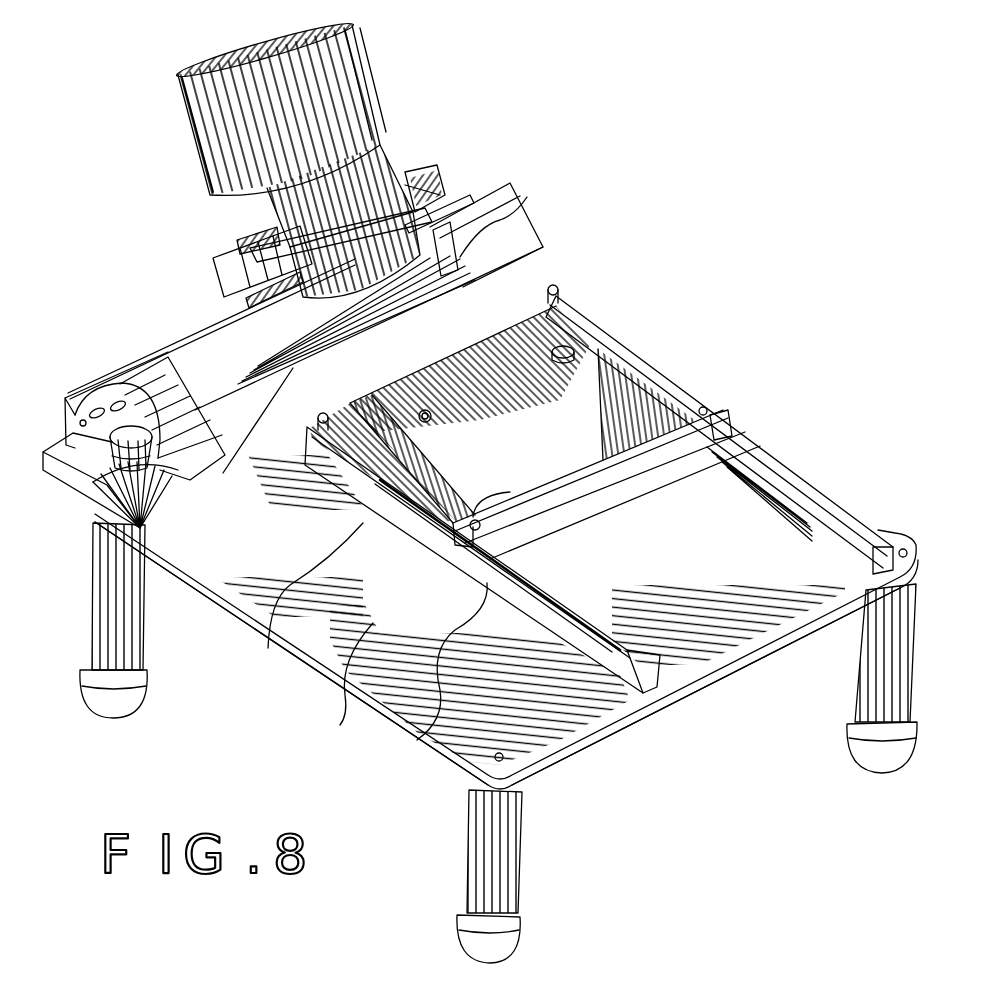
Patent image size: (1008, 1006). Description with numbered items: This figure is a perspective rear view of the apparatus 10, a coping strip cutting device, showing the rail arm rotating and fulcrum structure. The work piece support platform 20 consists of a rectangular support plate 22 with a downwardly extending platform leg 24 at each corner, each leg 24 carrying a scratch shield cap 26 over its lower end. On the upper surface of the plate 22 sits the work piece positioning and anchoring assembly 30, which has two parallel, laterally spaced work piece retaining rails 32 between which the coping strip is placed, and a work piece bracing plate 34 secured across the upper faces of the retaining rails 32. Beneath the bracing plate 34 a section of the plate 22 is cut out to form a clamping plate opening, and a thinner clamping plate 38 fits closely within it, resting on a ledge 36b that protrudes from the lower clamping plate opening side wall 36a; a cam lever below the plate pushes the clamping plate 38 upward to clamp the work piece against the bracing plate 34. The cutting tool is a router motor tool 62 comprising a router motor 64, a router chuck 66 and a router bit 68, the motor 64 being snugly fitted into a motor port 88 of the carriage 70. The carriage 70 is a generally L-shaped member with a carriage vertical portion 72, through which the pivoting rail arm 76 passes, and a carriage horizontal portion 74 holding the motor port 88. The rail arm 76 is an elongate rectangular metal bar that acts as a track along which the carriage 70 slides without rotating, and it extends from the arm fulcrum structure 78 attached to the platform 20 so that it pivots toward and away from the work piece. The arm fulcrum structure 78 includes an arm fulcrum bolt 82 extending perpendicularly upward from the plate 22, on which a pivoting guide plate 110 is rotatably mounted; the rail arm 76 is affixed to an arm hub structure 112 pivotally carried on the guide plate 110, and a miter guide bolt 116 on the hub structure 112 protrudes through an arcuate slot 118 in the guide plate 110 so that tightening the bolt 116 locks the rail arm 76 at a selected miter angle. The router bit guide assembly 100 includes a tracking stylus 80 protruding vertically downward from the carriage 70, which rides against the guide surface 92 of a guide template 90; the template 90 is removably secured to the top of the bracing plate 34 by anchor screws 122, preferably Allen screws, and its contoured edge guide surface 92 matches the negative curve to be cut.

The apparatus 10 is at (620, 173).
The work piece support platform 20 is at (350, 663).
The rectangular support plate 22 is at (400, 683).
The platform leg 24 is at (143, 633).
The scratch shield cap 26 is at (140, 697).
The work piece positioning and anchoring assembly 30 is at (718, 298).
The work piece retaining rails 32 is at (620, 692).
The work piece bracing plate 34 is at (427, 727).
The lower clamping plate opening side wall 36a is at (722, 413).
The ledge 36b is at (707, 463).
The clamping plate 38 is at (597, 497).
The router motor tool 62 is at (356, 78).
The router motor 64 is at (390, 152).
The router chuck 66 is at (470, 200).
The router bit 68 is at (270, 232).
The carriage 70 is at (240, 248).
The carriage vertical portion 72 is at (233, 304).
The carriage horizontal portion 74 is at (218, 276).
The pivoting rail arm 76 is at (530, 228).
The arm fulcrum structure 78 is at (135, 307).
The tracking stylus 80 is at (527, 203).
The arm fulcrum bolt 82 is at (100, 510).
The motor port 88 is at (425, 185).
The guide template 90 is at (527, 313).
The guide surface 92 is at (457, 383).
The router bit guide assembly 100 is at (680, 223).
The pivoting guide plate 110 is at (73, 472).
The arm hub structure 112 is at (168, 356).
The miter guide bolt 116 is at (110, 373).
The arcuate slot 118 is at (77, 395).
The anchor screws 122 is at (300, 634).